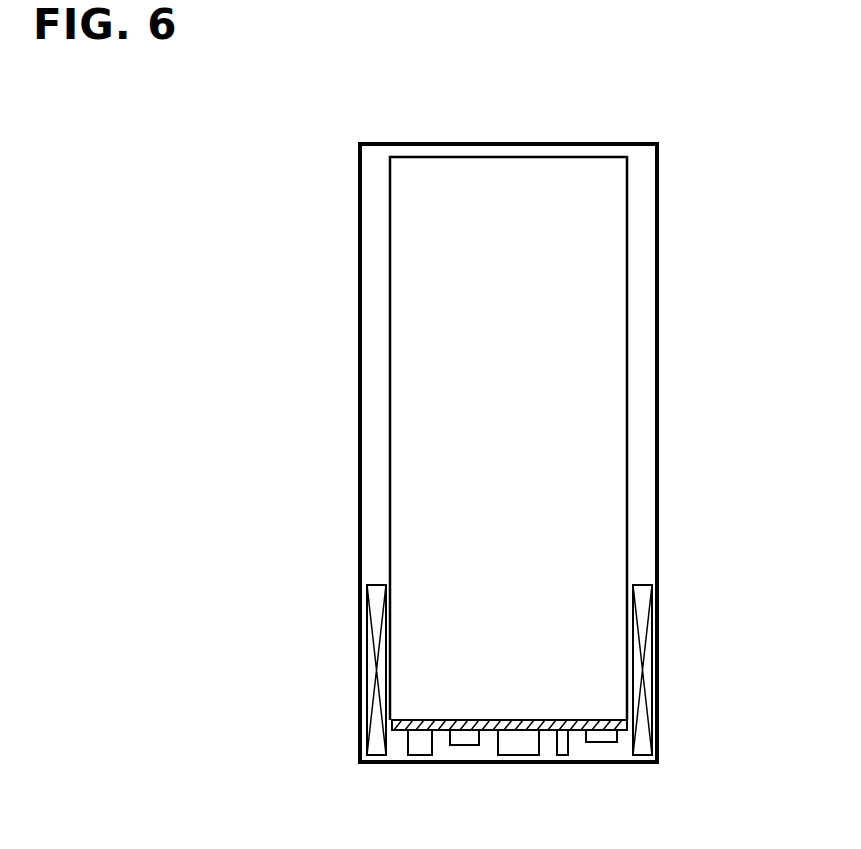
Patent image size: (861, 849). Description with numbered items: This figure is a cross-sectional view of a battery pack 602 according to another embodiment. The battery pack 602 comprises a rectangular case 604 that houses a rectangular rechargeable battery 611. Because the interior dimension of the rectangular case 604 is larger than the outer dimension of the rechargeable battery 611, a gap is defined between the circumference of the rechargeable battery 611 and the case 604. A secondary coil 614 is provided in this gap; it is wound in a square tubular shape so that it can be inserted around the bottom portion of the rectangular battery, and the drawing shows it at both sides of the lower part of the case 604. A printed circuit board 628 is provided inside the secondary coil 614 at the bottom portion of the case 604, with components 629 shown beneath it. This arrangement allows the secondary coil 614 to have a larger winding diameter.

The battery pack 602 is at (680, 149).
The rectangular case 604 is at (657, 302).
The rechargeable battery 611 is at (538, 445).
The secondary coil 614 is at (365, 667).
The printed circuit board 628 is at (523, 720).
The components under plate 629 is at (454, 757).